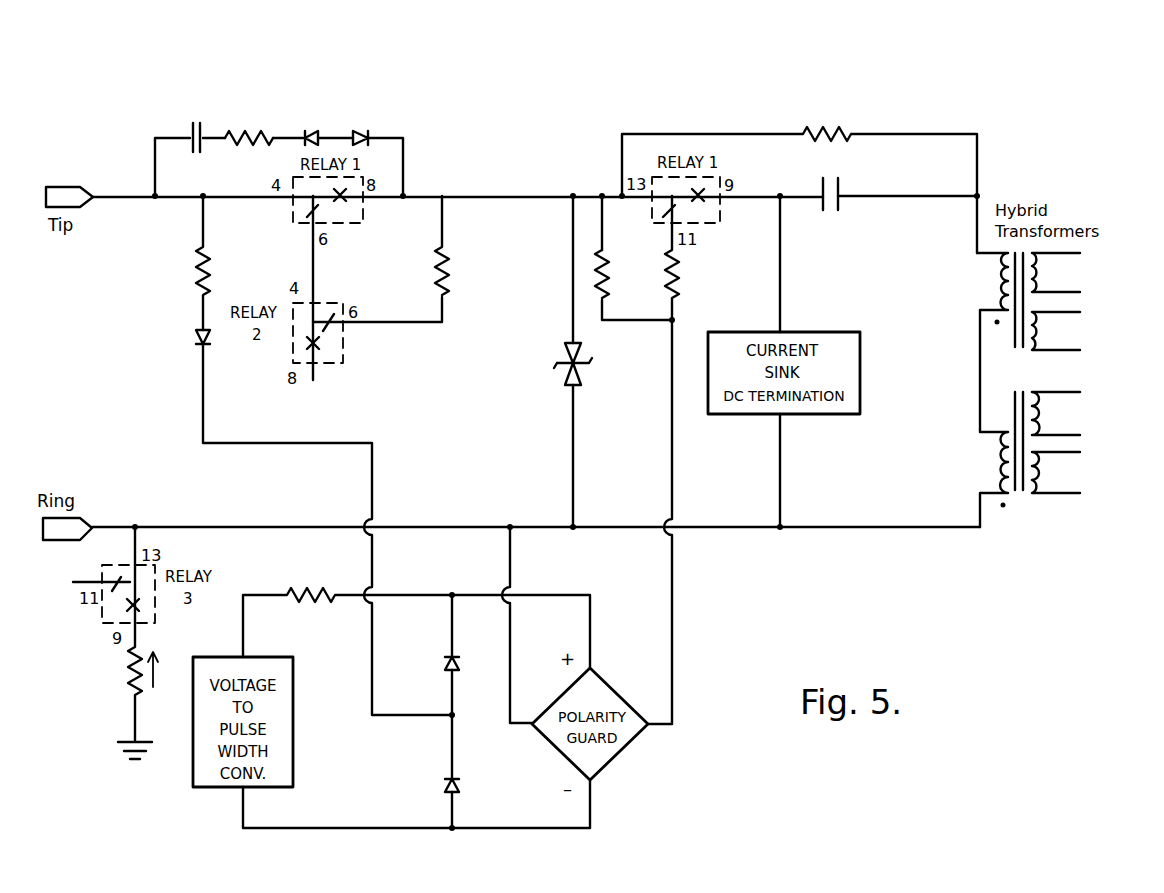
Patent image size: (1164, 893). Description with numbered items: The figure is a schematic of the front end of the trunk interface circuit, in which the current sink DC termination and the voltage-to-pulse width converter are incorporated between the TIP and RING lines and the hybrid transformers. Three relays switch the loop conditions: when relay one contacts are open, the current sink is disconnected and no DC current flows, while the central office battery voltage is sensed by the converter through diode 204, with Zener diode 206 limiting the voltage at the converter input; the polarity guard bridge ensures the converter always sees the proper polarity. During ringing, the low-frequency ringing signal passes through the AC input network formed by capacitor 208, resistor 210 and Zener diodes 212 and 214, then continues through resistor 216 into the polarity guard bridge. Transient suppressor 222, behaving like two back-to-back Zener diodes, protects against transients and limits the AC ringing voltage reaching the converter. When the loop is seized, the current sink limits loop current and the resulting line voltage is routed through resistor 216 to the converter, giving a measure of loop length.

The diode 204 is at (443, 662).
The Zener diode 206 is at (445, 782).
The capacitor 208 is at (192, 126).
The resistor 210 is at (246, 128).
The Zener diode 212 is at (311, 128).
The Zener diode 214 is at (364, 128).
The resistor 216 is at (612, 282).
The transient suppressor 222 is at (558, 356).